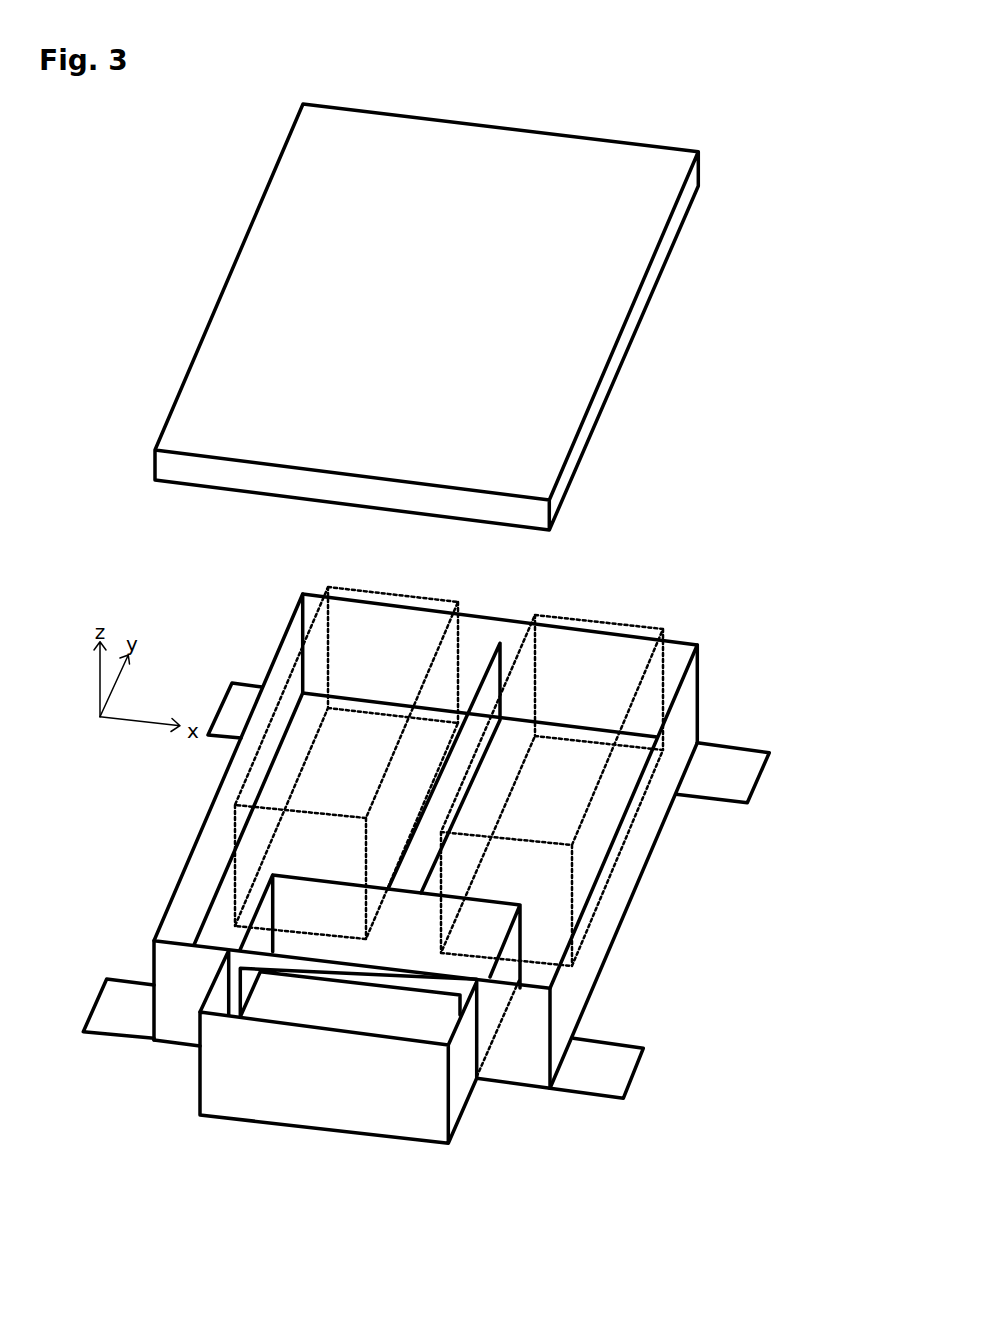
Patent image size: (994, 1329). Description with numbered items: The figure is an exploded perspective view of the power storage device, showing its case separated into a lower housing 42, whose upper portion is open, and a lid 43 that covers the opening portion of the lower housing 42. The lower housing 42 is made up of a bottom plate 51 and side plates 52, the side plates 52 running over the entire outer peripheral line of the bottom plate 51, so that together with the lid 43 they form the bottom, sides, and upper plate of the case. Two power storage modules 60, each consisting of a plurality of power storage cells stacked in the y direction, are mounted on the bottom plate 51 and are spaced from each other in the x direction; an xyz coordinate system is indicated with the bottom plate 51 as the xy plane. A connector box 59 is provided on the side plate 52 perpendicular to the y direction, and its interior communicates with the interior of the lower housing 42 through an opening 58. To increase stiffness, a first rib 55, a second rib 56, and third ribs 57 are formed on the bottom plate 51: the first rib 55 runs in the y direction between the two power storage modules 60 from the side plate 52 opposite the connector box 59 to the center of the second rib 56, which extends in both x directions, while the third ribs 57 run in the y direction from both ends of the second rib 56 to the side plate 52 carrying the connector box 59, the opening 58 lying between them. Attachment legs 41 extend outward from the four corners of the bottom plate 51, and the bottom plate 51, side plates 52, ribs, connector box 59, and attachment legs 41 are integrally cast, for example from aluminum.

The attachment legs 41 is at (225, 697).
The lower housing 42 is at (710, 614).
The lid 43 is at (637, 143).
The bottom plate 51 is at (217, 925).
The side plates 52 is at (502, 618).
The first rib 55 is at (488, 672).
The second rib 56 is at (505, 902).
The third ribs 57 is at (255, 913).
The opening 58 is at (233, 978).
The connector box 59 is at (420, 1108).
The power storage modules 60 is at (412, 595).